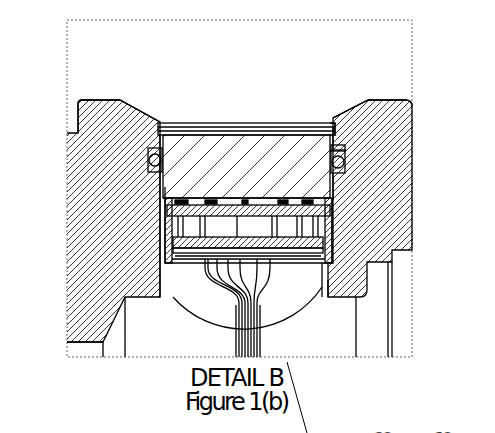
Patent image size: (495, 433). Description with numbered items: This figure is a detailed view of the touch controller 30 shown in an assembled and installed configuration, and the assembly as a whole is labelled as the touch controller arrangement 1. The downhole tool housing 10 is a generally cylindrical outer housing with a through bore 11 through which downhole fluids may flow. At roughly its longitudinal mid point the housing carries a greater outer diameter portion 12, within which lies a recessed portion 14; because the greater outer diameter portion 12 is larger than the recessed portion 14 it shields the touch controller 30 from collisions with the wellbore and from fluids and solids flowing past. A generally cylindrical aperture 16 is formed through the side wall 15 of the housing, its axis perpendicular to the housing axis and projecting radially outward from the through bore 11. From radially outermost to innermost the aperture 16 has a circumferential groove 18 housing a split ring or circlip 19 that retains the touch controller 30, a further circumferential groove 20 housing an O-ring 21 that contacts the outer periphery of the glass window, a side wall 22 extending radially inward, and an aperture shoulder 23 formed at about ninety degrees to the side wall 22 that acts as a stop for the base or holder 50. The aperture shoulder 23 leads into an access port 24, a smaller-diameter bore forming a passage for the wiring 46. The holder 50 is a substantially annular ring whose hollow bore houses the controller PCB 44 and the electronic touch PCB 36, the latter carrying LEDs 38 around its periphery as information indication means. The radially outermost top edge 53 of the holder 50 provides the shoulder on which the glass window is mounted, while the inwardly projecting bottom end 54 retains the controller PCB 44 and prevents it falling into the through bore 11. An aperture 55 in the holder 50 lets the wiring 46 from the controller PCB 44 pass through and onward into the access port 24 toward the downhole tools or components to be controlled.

The sensor assembly 1 is at (215, 133).
The downhole tool housing 10 is at (92, 270).
The through bore 11 is at (88, 348).
The greater outer diameter portion 12 is at (95, 99).
The recessed portion 14 is at (138, 102).
The side wall 15 is at (108, 163).
The aperture 16 is at (333, 145).
The circumferential groove 18 is at (335, 133).
The split ring or circlip 19 is at (228, 128).
The further circumferential groove 20 is at (343, 160).
The O-ring 21 is at (339, 163).
The side wall 22 is at (332, 215).
The aperture shoulder 23 is at (327, 288).
The access port 24 is at (322, 285).
The touch controller 30 is at (292, 103).
The electronic touch PCB 36 is at (255, 200).
The LEDs 38 is at (282, 201).
The controller PCB 44 is at (312, 243).
The wiring 46 is at (237, 343).
The base or holder 50 is at (325, 250).
The top edge 53 is at (165, 187).
The inwardly projecting bottom end 54 is at (185, 262).
The aperture 55 is at (203, 265).